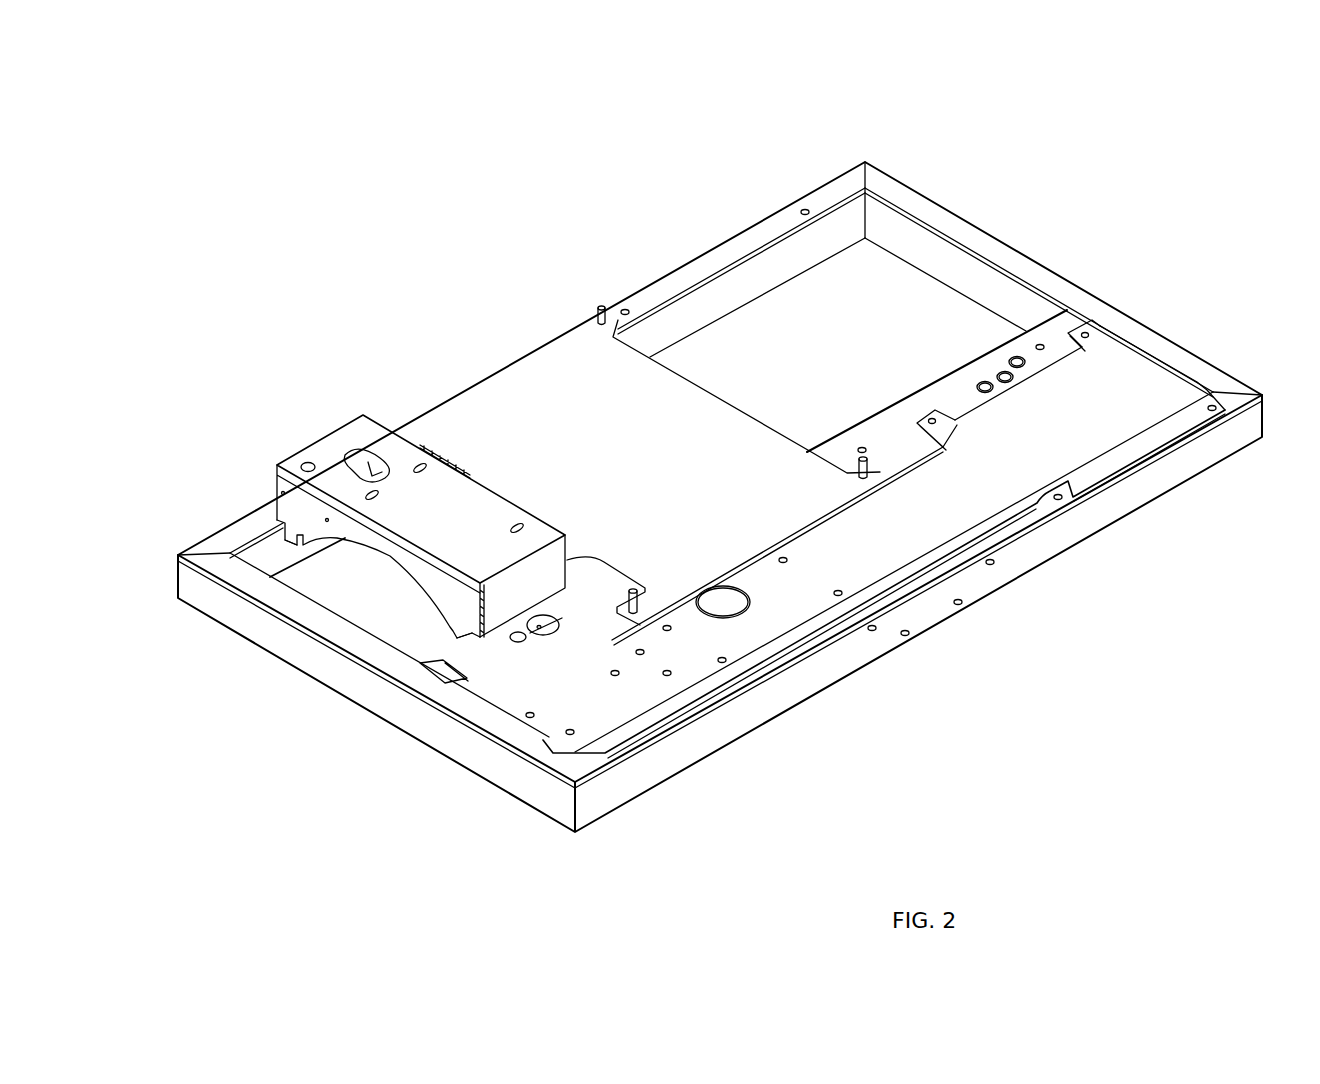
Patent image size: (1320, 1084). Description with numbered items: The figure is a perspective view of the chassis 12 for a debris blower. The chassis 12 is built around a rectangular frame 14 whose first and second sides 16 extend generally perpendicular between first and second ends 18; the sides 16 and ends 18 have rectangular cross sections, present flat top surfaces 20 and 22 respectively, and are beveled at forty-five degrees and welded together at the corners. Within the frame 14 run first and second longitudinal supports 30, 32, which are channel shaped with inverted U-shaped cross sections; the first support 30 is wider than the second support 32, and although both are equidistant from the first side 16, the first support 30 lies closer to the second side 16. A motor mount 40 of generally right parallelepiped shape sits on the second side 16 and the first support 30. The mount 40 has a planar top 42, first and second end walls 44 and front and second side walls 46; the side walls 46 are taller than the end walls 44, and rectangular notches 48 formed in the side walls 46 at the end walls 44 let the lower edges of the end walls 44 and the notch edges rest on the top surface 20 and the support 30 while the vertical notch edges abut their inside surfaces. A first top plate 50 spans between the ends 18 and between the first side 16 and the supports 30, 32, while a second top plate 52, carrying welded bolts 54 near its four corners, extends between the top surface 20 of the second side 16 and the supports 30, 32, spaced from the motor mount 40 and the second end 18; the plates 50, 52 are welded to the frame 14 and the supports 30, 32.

The chassis 12 is at (342, 190).
The rectangular frame 14 is at (740, 745).
The first and second sides 16 is at (245, 528).
The first and second ends 18 is at (1060, 284).
The flat top surface 20 is at (697, 265).
The flat top surface 22 is at (963, 226).
The first longitudinal support 30 is at (458, 660).
The second longitudinal support 32 is at (968, 393).
The motor mount 40 is at (475, 496).
The planar top 42 is at (437, 487).
The first and second end walls 44 is at (543, 572).
The side walls 46 is at (388, 546).
The notches 48 is at (287, 548).
The first top plate 50 is at (982, 513).
The second top plate 52 is at (547, 364).
The bolts 54 is at (601, 303).